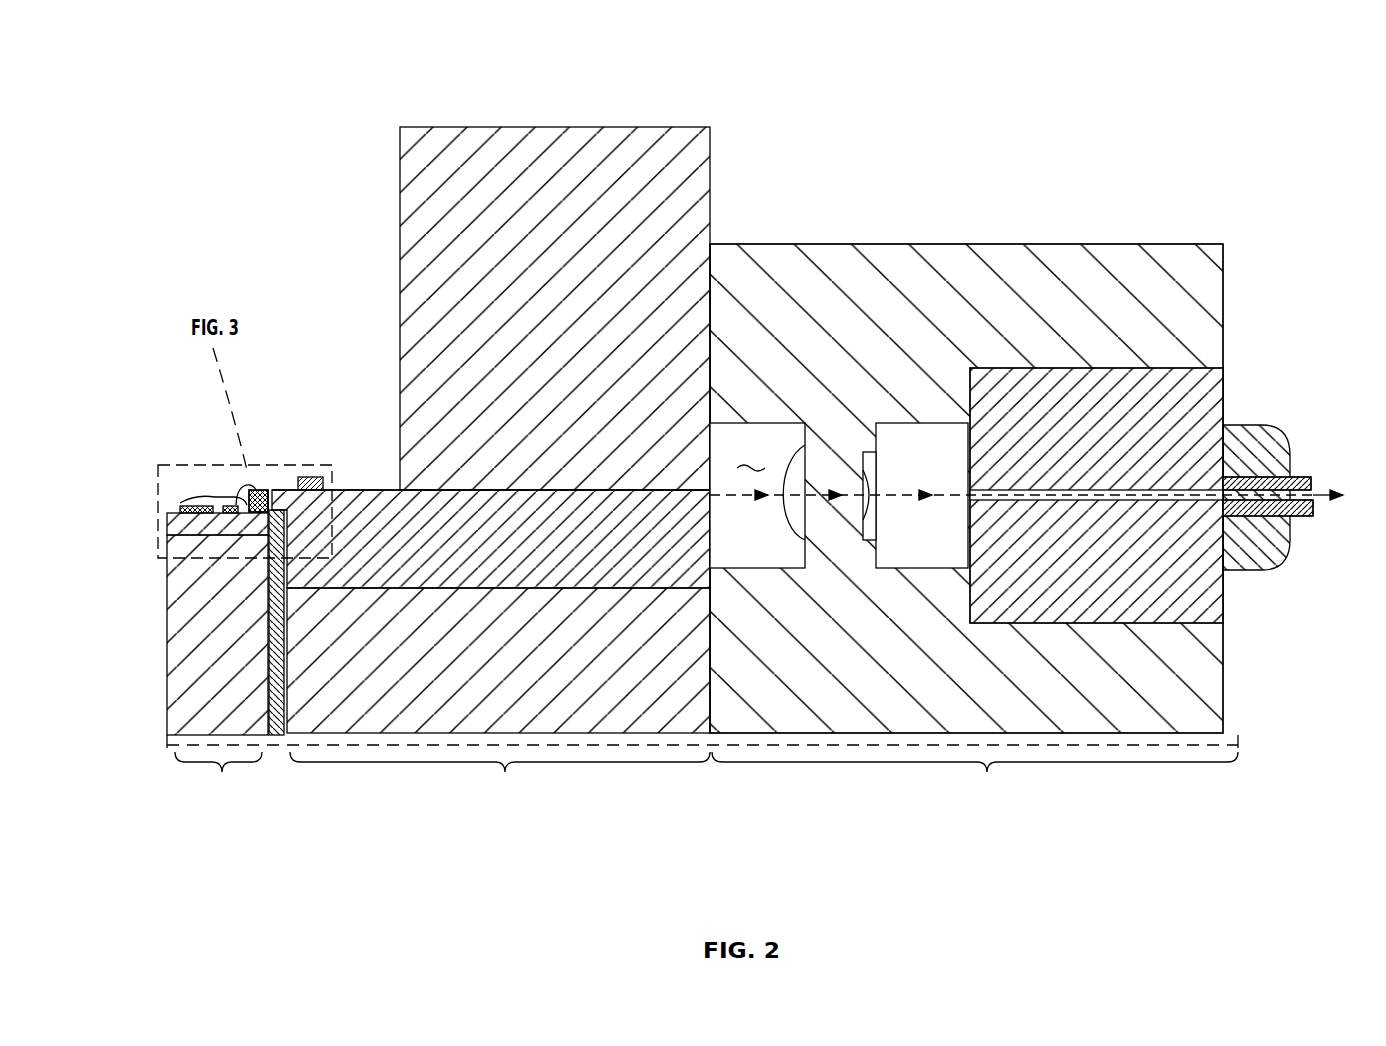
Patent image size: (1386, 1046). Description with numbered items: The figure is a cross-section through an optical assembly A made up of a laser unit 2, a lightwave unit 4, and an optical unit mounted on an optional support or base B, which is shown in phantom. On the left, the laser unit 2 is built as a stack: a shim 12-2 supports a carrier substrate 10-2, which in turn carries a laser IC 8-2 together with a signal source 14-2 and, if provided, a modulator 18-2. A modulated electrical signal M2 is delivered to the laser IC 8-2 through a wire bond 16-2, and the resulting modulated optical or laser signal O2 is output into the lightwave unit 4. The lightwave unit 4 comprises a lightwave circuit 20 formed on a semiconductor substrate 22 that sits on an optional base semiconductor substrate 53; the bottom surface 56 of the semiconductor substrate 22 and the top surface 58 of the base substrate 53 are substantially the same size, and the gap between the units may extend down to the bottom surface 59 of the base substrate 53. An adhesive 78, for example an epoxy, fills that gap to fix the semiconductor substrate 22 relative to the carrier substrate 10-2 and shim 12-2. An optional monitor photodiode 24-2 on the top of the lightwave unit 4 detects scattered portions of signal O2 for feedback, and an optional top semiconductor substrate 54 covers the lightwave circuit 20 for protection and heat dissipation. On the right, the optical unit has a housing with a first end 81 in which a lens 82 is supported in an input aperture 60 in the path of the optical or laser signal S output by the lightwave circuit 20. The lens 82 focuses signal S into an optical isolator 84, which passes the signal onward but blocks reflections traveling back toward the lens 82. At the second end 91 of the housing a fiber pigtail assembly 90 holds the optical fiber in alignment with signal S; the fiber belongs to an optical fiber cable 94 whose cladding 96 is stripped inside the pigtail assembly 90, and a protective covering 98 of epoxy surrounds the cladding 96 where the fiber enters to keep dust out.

The optical assembly A is at (268, 93).
The top semiconductor substrate 54 is at (428, 142).
The input aperture 60 is at (752, 462).
The first end 81 is at (713, 244).
The second end 91 is at (1223, 256).
The optical fiber cable 94 is at (1298, 470).
The cladding 96 is at (1291, 518).
The protective covering 98 is at (1250, 570).
The fiber pigtail assembly 90 is at (1207, 563).
The optical or laser signal S is at (752, 497).
The lens 82 is at (800, 538).
The optical isolator 84 is at (931, 543).
The laser unit 2 is at (218, 784).
The adhesive 78 is at (276, 735).
The base semiconductor substrate 53 is at (372, 710).
The top surface 58 is at (432, 590).
The bottom surface 59 is at (503, 735).
The semiconductor substrate 22 is at (538, 570).
The bottom surface 56 is at (613, 588).
The lightwave unit 4 is at (500, 784).
The base B is at (1172, 745).
The modulated electrical signal M2 is at (178, 484).
The carrier substrate 10-2 is at (170, 512).
The shim 12-2 is at (200, 607).
The signal source 14-2 is at (183, 500).
The wire bond 16-2 is at (240, 495).
The laser IC 8-2 is at (255, 490).
The modulator 18-2 is at (268, 505).
The modulated optical or laser signal O2 is at (285, 482).
The monitor photodiode 24-2 is at (312, 487).
The lightwave circuit 20 is at (347, 488).